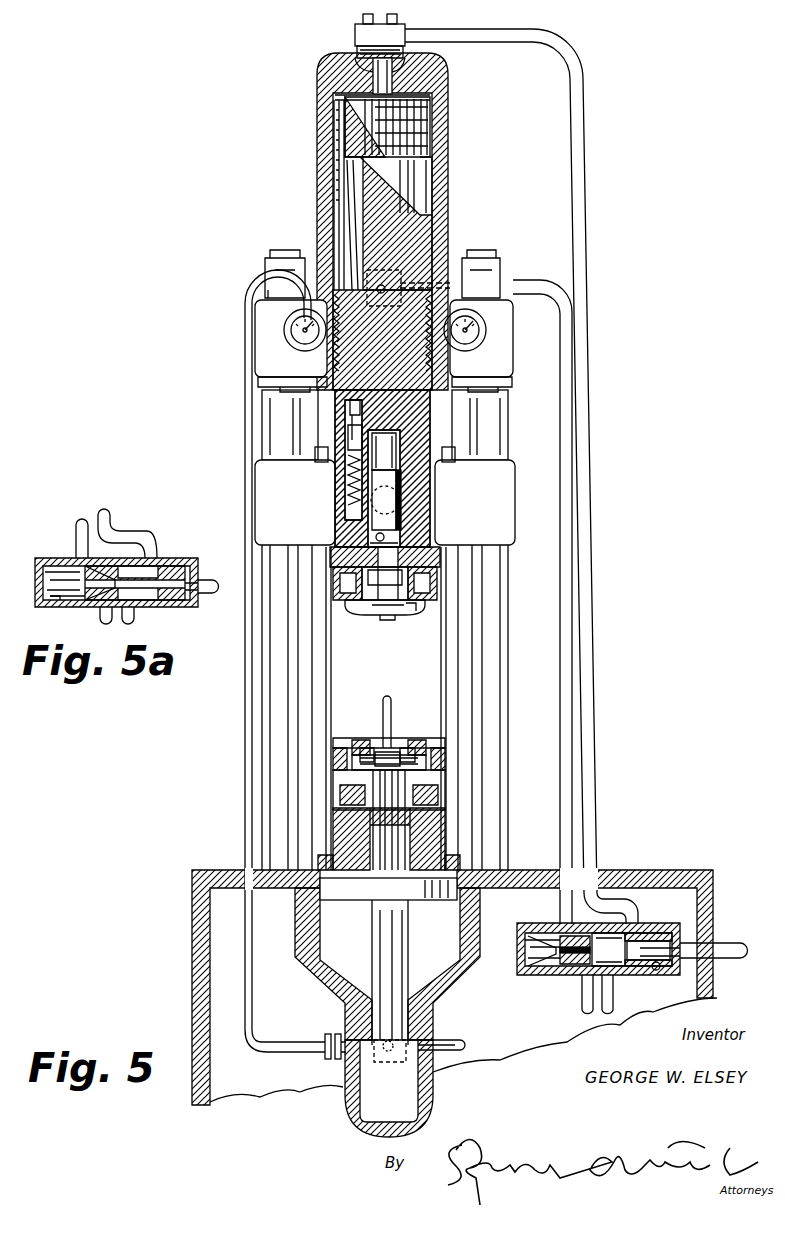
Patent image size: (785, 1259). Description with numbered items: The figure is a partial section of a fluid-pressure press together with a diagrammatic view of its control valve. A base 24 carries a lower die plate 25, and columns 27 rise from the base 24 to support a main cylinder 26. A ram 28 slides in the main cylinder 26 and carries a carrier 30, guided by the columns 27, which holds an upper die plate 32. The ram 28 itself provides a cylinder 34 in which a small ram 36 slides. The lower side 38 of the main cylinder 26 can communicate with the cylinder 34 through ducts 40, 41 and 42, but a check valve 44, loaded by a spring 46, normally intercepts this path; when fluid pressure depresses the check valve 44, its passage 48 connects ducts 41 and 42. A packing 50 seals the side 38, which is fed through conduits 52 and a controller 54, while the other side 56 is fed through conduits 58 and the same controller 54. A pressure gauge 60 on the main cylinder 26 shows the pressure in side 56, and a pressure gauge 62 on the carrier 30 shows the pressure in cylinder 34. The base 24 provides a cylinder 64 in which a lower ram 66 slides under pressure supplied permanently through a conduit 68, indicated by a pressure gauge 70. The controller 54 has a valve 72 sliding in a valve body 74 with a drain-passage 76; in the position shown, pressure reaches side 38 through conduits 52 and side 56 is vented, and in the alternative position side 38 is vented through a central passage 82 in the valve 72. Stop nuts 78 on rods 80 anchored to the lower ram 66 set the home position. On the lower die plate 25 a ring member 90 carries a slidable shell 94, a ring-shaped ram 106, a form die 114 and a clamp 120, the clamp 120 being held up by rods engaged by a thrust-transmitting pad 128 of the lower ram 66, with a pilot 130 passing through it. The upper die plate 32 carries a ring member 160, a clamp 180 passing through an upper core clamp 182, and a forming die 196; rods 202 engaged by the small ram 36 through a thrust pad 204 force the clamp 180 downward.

In FIG. 5, the base 24 is at (655, 872).
In FIG. 5, the lower die plate 25 is at (432, 845).
In FIG. 5, the main cylinder 26 is at (450, 183).
In FIG. 5, the columns 27 is at (285, 683).
In FIG. 5, the ram 28 is at (436, 166).
In FIG. 5, the carrier 30 is at (512, 484).
In FIG. 5, the upper die plate 32 is at (445, 572).
In FIG. 5, the cylinder 34 is at (398, 472).
In FIG. 5, the small ram 36 is at (398, 532).
In FIG. 5, the side of main cylinder 38 is at (346, 203).
In FIG. 5, the duct 40 is at (334, 170).
In FIG. 5, the duct 41 is at (362, 245).
In FIG. 5, the duct 42 is at (432, 445).
In FIG. 5, the check valve 44 is at (350, 433).
In FIG. 5, the spring 46 is at (342, 480).
In FIG. 5, the passage 48 is at (348, 412).
In FIG. 5, the packing 50 is at (290, 353).
In FIG. 5, the conduits 52 is at (558, 612).
In FIG. 5A, the conduits 52 is at (75, 523).
In FIG. 5, the controller 54 is at (543, 923).
In FIG. 5A, the controller 54 is at (190, 558).
In FIG. 5, the other side of cylinder 56 is at (445, 84).
In FIG. 5, the conduits 58 is at (592, 588).
In FIG. 5A, the conduits 58 is at (112, 523).
In FIG. 5, the pressure gauge 60 is at (480, 334).
In FIG. 5, the pressure gauge 62 is at (400, 500).
In FIG. 5, the cylinder 64 is at (352, 1066).
In FIG. 5, the lower ram 66 is at (380, 960).
In FIG. 5, the conduit 68 is at (242, 304).
In FIG. 5, the pressure gauge 70 is at (293, 318).
In FIG. 5, the valve 72 is at (527, 941).
In FIG. 5A, the valve 72 is at (190, 570).
In FIG. 5, the valve body 74 is at (657, 972).
In FIG. 5A, the valve body 74 is at (58, 612).
In FIG. 5, the drain-passage 76 is at (730, 946).
In FIG. 5A, the drain-passage 76 is at (206, 590).
In FIG. 5, the stop nuts 78 is at (314, 456).
In FIG. 5, the rods 80 is at (329, 660).
In FIG. 5, the central passage 82 is at (540, 972).
In FIG. 5A, the central passage 82 is at (60, 584).
In FIG. 5, the ring member 90 is at (448, 785).
In FIG. 5, the shell 94 is at (448, 758).
In FIG. 5, the ring-shaped ram 106 is at (378, 730).
In FIG. 5, the form die 114 is at (365, 740).
In FIG. 5, the clamp 120 is at (410, 740).
In FIG. 5, the thrust-transmitting pad 128 is at (384, 876).
In FIG. 5, the pilot 130 is at (400, 700).
In FIG. 5, the ring member 160 is at (440, 590).
In FIG. 5, the clamp 180 is at (374, 617).
In FIG. 5, the upper core clamp 182 is at (360, 614).
In FIG. 5, the forming die 196 is at (406, 614).
In FIG. 5, the rods 202 is at (378, 556).
In FIG. 5, the thrust pad 204 is at (372, 538).